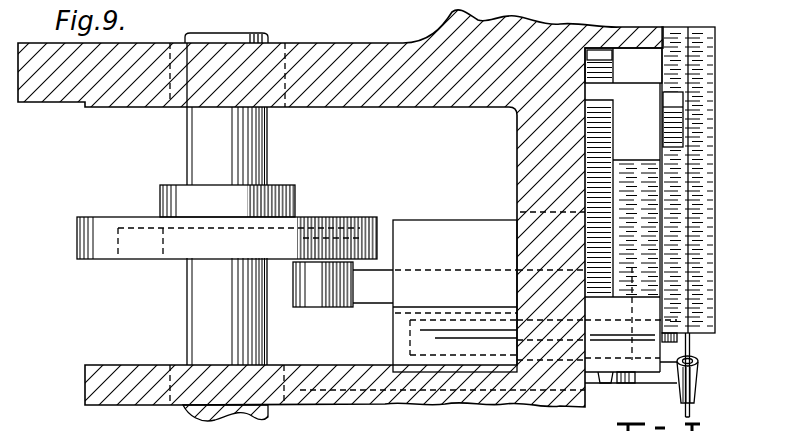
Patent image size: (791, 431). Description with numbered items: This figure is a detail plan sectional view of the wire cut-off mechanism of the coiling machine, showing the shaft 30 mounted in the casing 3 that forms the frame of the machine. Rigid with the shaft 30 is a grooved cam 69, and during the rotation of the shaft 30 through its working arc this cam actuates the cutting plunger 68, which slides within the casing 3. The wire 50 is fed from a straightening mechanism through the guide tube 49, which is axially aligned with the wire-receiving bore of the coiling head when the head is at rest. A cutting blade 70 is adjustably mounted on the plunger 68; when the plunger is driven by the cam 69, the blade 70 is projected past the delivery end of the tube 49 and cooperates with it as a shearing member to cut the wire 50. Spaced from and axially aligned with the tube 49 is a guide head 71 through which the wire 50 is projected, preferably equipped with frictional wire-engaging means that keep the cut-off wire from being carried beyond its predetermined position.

The casing 3 is at (626, 28).
The shaft 30 is at (203, 144).
The grooved cam 69 is at (351, 218).
The cutting plunger 68 is at (357, 307).
The guide tube 49 is at (715, 145).
The cutting blade 70 is at (678, 343).
The guide head 71 is at (698, 384).
The wire 50 is at (692, 413).